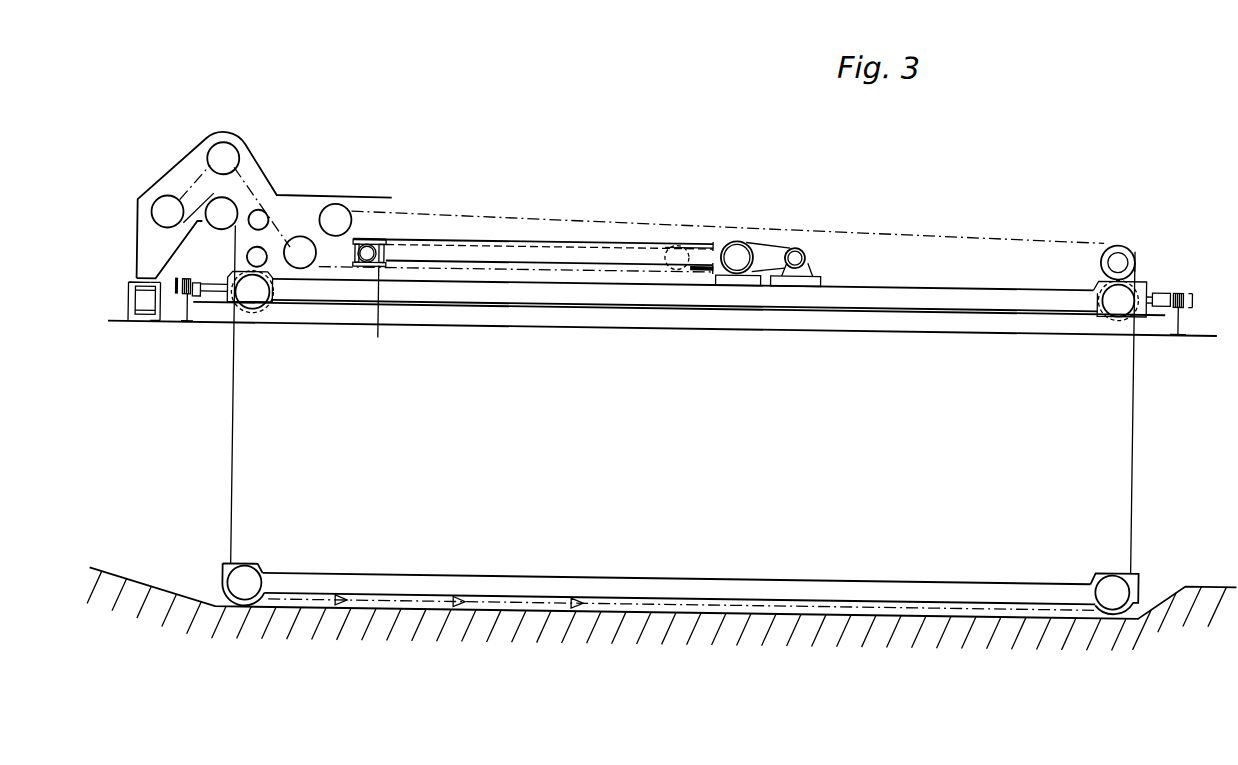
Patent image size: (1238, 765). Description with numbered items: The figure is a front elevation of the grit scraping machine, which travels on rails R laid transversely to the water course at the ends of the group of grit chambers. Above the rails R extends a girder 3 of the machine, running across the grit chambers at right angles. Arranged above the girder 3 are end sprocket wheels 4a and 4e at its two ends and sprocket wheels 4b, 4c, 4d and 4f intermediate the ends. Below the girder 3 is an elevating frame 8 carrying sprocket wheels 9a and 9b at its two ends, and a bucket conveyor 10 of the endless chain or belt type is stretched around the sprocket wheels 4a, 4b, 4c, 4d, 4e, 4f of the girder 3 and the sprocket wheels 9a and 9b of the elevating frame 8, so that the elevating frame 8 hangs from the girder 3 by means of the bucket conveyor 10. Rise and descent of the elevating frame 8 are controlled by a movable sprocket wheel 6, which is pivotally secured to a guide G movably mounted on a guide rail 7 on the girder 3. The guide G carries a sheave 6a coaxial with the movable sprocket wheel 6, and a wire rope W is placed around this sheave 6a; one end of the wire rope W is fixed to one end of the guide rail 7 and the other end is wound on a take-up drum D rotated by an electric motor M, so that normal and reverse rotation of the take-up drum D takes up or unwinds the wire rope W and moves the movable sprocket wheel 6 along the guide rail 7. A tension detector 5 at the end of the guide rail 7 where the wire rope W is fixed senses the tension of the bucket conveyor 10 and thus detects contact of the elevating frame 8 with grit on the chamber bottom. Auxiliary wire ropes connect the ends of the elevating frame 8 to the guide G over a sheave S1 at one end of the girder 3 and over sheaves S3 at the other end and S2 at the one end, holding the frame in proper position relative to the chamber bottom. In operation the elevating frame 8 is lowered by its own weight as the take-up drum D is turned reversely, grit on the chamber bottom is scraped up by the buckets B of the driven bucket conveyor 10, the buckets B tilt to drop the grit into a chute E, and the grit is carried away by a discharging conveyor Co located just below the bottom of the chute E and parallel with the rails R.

The girder 3 is at (705, 290).
The end sprocket wheel 4a is at (163, 211).
The sprocket wheel 4b is at (222, 141).
The sprocket wheel 4c is at (301, 249).
The sprocket wheel 4d is at (336, 216).
The end sprocket wheel 4e is at (1117, 239).
The sprocket wheel 4f is at (220, 211).
The tension detector 5 is at (707, 259).
The movable sprocket wheel 6 is at (367, 240).
The sheave 6a is at (375, 313).
The guide rail 7 is at (602, 245).
The elevating frame 8 is at (560, 577).
The sprocket wheel 9a is at (250, 576).
The sprocket wheel 9b is at (1115, 574).
The bucket conveyor 10 is at (236, 420).
The bucket B is at (351, 604).
The conveyor Co is at (130, 300).
The take-up drum D is at (737, 233).
The chute E is at (154, 253).
The guide G is at (381, 238).
The electric motor M is at (804, 249).
The rail R is at (185, 321).
The sheave S1 is at (256, 254).
The sheave S2 is at (259, 214).
The sheave S3 is at (1134, 247).
The wire rope W is at (485, 233).